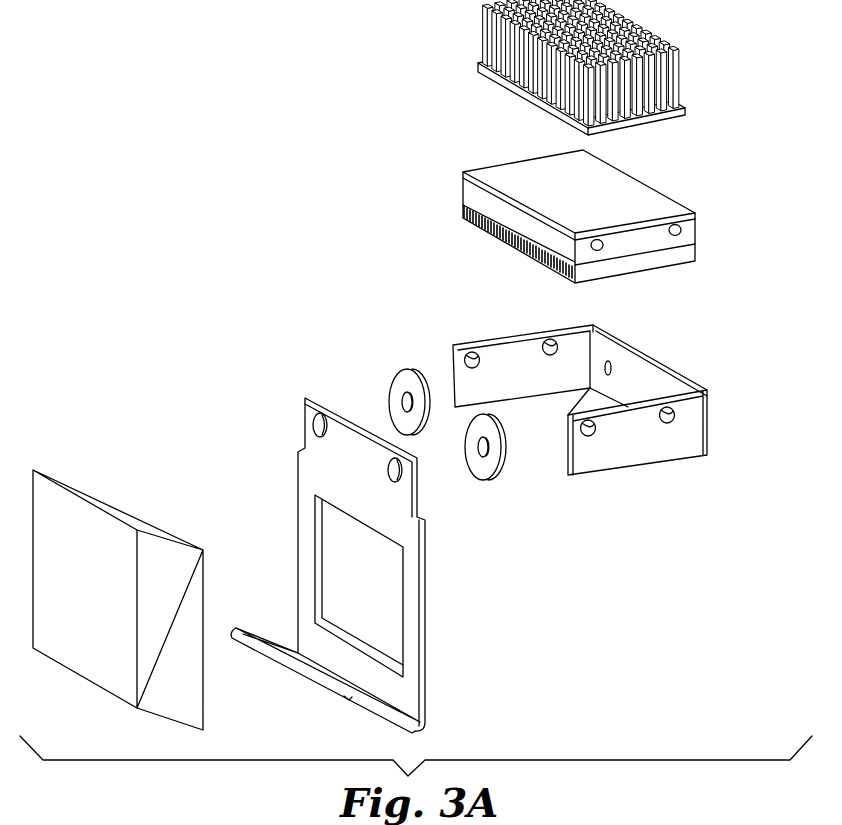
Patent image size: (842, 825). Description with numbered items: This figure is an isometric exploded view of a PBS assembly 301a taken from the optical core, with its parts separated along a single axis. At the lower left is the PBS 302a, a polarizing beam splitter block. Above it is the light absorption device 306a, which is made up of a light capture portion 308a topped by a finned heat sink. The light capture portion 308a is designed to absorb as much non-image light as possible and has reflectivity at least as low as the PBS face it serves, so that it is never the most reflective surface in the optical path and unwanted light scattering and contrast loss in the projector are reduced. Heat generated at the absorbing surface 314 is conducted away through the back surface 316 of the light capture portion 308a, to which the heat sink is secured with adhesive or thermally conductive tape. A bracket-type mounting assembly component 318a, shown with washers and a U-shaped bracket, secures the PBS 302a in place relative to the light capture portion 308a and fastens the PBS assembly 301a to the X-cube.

The PBS assembly 301a is at (215, 100).
The PBS 302a is at (193, 705).
The light absorption device 306a is at (704, 283).
The light capture portion 308a is at (535, 201).
The absorbing surface 314 is at (637, 120).
The back surface 316 is at (503, 167).
The mounting assembly component 318a is at (427, 592).